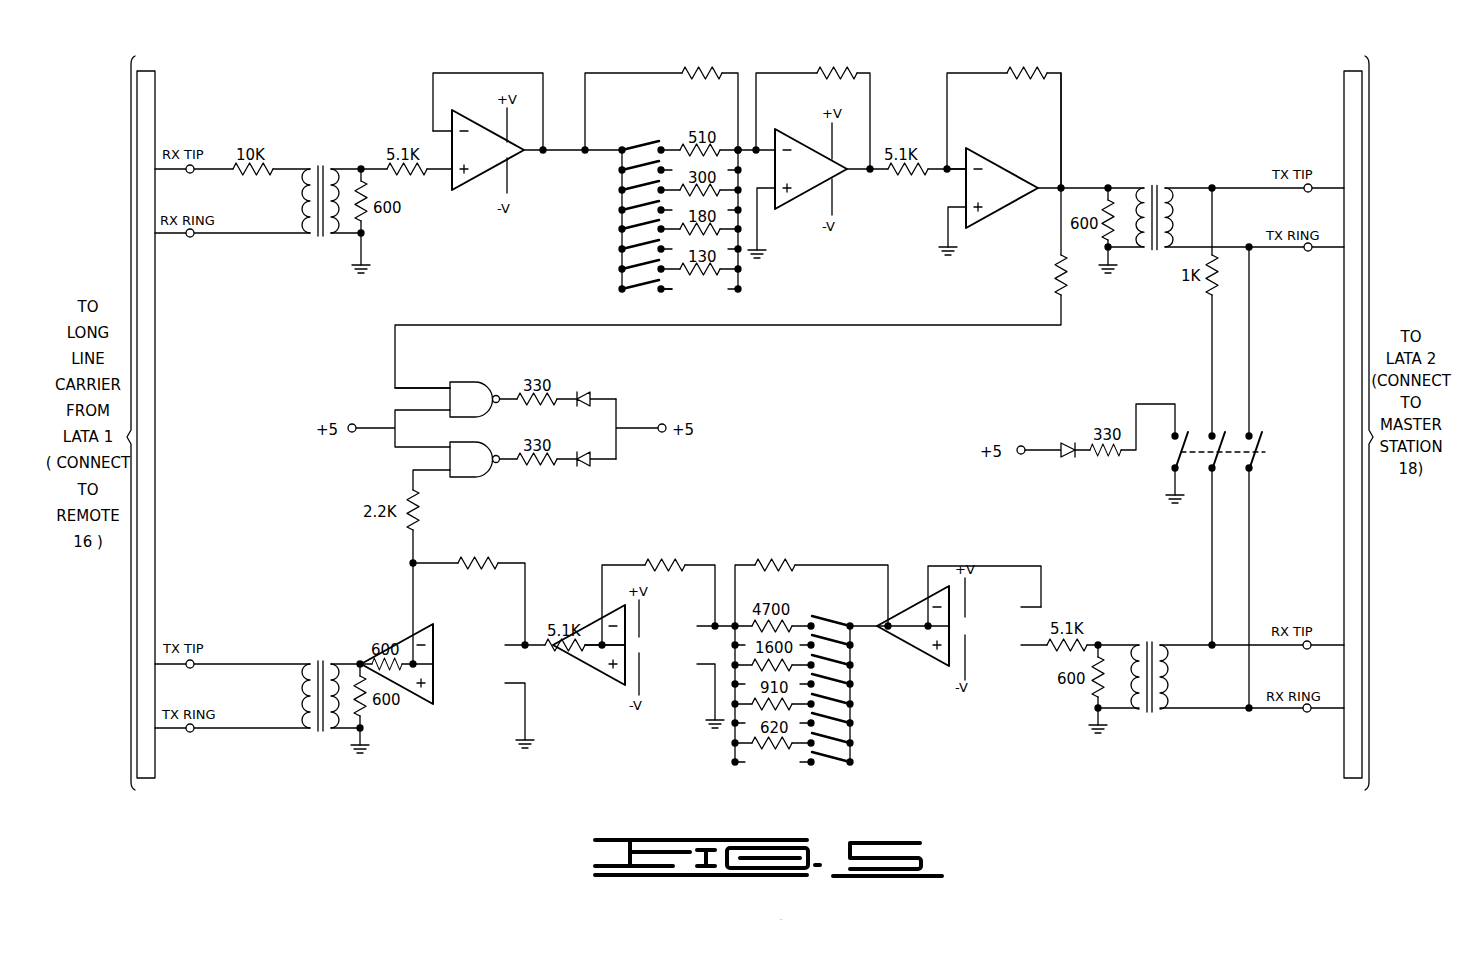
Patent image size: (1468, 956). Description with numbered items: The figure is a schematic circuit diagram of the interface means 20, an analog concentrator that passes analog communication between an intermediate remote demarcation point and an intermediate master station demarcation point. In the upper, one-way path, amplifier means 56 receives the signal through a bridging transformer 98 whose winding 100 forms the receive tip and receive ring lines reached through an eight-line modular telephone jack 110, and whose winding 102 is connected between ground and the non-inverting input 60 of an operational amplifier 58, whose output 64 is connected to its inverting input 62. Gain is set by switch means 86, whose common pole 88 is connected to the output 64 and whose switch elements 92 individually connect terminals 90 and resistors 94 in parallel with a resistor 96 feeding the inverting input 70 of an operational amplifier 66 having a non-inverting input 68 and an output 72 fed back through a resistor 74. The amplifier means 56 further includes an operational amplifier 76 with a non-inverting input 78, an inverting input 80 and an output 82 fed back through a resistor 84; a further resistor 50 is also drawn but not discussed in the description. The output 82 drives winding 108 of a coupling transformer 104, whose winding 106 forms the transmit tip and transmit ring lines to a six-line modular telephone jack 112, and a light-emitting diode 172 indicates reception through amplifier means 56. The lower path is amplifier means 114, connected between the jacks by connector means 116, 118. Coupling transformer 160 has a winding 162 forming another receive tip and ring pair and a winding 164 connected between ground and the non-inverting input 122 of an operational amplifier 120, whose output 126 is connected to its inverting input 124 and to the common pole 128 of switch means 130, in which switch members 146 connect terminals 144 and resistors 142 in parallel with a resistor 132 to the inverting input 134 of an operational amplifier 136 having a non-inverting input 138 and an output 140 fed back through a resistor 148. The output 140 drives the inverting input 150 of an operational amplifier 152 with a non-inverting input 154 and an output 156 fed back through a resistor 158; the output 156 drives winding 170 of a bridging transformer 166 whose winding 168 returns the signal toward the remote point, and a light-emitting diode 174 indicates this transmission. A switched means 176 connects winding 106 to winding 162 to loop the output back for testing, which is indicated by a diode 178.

The eight-line modular telephone jack 110 is at (155, 92).
The winding 100 is at (307, 194).
The winding 102 is at (345, 175).
The transformer 98 is at (321, 252).
The inverting input 62 is at (438, 134).
The output 64 is at (523, 152).
The non-inverting input 60 is at (447, 178).
The operational amplifier 58 is at (477, 177).
The resistor 96 is at (731, 45).
The switch elements 92 is at (637, 136).
The resistors 94 is at (713, 133).
The common pole 88 is at (621, 222).
The switch means 86 is at (610, 245).
The terminals 90 is at (666, 299).
The inverting input 70 is at (774, 148).
The non-inverting input 68 is at (774, 195).
The operational amplifier 66 is at (800, 197).
The output 72 is at (851, 172).
The resistor 74 is at (883, 52).
The amplifier means 56 is at (1065, 62).
The resistor 84 is at (1027, 101).
The inverting input 80 is at (965, 167).
The output 82 is at (1044, 187).
The non-inverting input 78 is at (965, 216).
The operational amplifier 76 is at (1004, 208).
The resistor 50 is at (731, 288).
The transformer 104 is at (1159, 174).
The winding 106 is at (1171, 210).
The winding 108 is at (1136, 230).
The six-line modular telephone jack 112 is at (1344, 88).
The interface means 20 is at (1389, 58).
The light-emitting diode 172 is at (581, 393).
The light-emitting diode 174 is at (582, 467).
The diode 178 is at (1067, 444).
The switched means 176 is at (1265, 452).
The resistor 158 is at (524, 549).
The output 156 is at (434, 663).
The operational amplifier 152 is at (462, 686).
The inverting input 150 is at (509, 647).
The non-inverting input 154 is at (508, 677).
The bridging transformer 166 is at (322, 648).
The winding 168 is at (303, 677).
The connector means 118 is at (312, 746).
The winding 170 is at (340, 708).
The amplifier means 114 is at (568, 785).
The resistor 148 is at (657, 565).
The inverting input 134 is at (697, 620).
The resistor 132 is at (825, 550).
The resistors 142 is at (800, 612).
The switch members 146 is at (844, 616).
The common pole 128 is at (852, 680).
The terminals 144 is at (806, 774).
The switch means 130 is at (832, 773).
The output 140 is at (624, 649).
The operational amplifier 136 is at (674, 679).
The non-inverting input 138 is at (707, 672).
The inverting input 124 is at (1023, 618).
The output 126 is at (950, 631).
The operational amplifier 120 is at (995, 660).
The non-inverting input 122 is at (1033, 655).
The transformer 160 is at (1157, 634).
The winding 162 is at (1166, 688).
The winding 164 is at (1134, 688).
The connector means 116 is at (1166, 753).